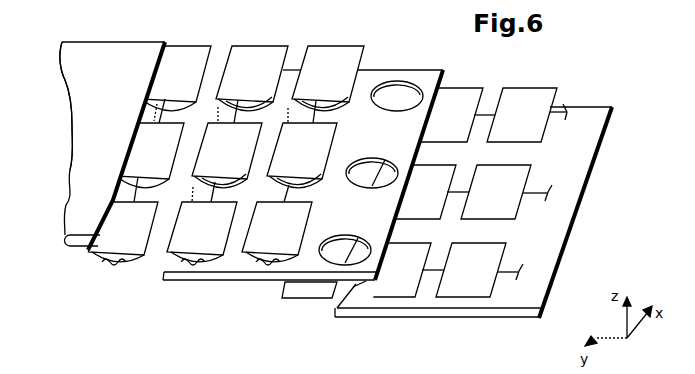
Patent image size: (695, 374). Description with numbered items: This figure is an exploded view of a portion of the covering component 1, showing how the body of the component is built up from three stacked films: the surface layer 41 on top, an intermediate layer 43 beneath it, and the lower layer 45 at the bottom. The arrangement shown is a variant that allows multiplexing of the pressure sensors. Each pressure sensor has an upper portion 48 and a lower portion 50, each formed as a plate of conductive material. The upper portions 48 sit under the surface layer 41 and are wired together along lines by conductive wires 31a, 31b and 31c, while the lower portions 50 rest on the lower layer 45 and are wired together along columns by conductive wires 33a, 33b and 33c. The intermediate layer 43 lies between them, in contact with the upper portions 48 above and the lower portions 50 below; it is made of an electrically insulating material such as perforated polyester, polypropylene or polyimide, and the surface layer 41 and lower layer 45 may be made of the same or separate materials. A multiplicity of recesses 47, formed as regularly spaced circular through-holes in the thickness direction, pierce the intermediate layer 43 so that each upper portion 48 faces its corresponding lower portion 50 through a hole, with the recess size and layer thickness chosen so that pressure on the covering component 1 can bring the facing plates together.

The covering component 1 is at (56, 170).
The surface layer 41 is at (136, 75).
The intermediate layer 43 is at (352, 220).
The lower layer 45 is at (553, 221).
The recesses 47 is at (397, 108).
The upper portion 48 is at (263, 81).
The lower portion 50 is at (510, 202).
The conductive wire 31a is at (128, 262).
The conductive wire 31b is at (205, 282).
The conductive wire 31c is at (278, 282).
The conductive wire 33a is at (563, 106).
The conductive wire 33b is at (537, 180).
The conductive wire 33c is at (510, 272).